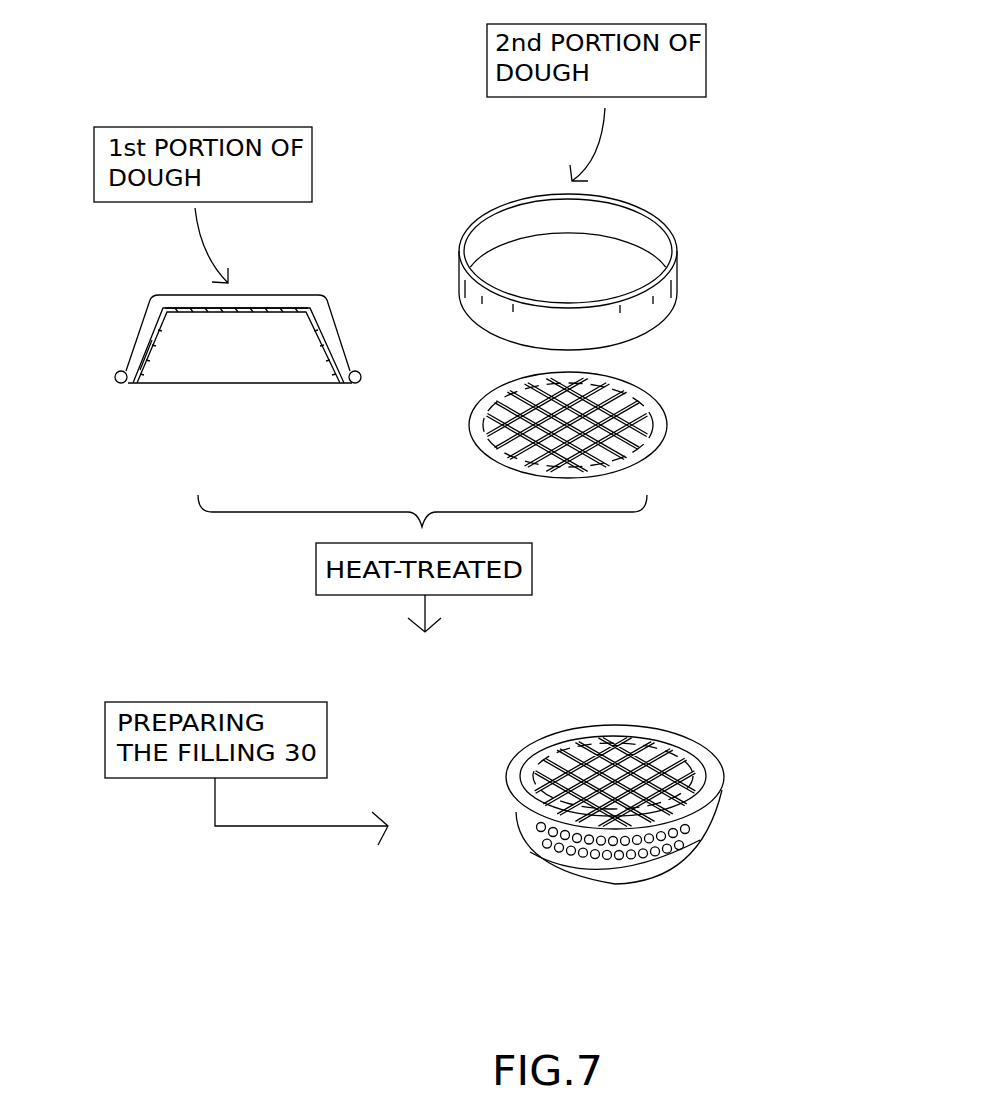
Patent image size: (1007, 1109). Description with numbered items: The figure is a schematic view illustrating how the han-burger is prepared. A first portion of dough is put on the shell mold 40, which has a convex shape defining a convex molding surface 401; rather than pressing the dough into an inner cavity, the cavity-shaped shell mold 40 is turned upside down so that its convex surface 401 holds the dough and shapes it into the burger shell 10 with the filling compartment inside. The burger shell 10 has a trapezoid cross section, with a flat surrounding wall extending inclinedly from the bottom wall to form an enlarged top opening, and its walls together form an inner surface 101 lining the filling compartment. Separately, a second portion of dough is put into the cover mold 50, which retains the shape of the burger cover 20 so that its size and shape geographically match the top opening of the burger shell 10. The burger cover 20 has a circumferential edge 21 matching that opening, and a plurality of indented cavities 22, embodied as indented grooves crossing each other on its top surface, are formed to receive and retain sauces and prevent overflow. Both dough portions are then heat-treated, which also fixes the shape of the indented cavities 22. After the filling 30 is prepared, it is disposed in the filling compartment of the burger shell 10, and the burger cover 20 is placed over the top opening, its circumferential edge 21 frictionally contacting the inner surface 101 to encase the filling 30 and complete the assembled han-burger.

The burger shell 10 is at (143, 342).
The inner surface 101 is at (180, 307).
The shell mold 40 is at (148, 360).
The convex molding surface 401 is at (130, 357).
The cover mold 50 is at (643, 237).
The burger cover 20 is at (611, 578).
The circumferential edge 21 is at (663, 443).
The indented cavities 22 is at (598, 395).
The filling 30 is at (653, 862).